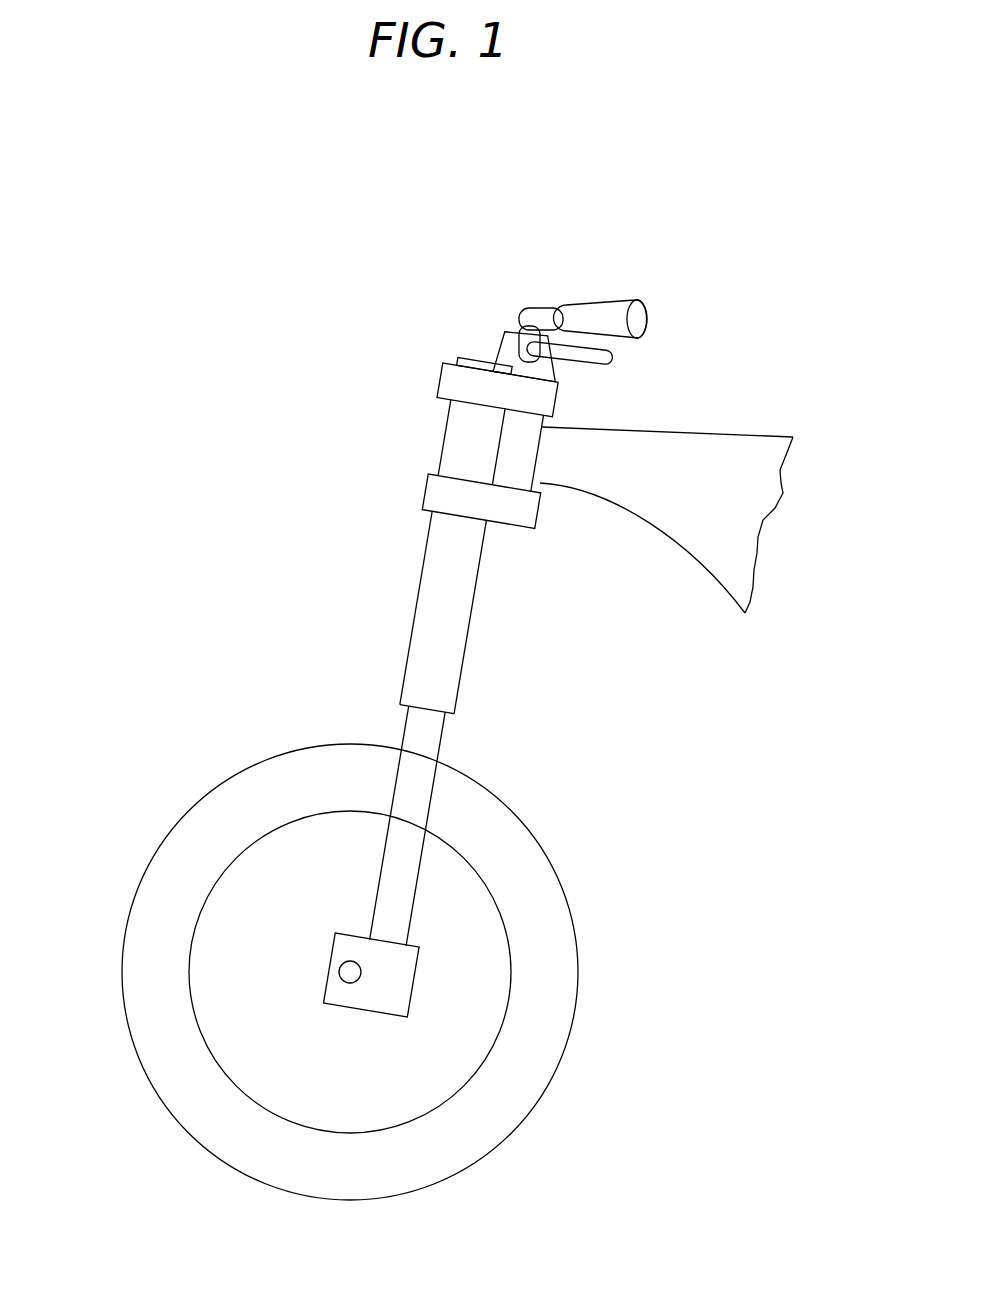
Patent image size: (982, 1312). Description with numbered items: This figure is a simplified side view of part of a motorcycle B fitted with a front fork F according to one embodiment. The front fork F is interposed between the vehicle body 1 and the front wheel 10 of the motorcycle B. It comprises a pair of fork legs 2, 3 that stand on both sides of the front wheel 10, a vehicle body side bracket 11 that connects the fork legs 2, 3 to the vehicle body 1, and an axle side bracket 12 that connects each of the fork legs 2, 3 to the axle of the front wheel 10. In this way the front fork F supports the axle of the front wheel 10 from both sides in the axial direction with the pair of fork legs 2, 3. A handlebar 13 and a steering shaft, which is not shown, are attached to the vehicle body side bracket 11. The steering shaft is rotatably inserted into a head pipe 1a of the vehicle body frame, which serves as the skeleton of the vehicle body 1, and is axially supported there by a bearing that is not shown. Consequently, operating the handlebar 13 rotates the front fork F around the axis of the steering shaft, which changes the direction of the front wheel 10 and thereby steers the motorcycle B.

The motorcycle B is at (429, 294).
The vehicle body 1 is at (712, 460).
The head pipe 1a is at (527, 457).
The fork leg 2 is at (387, 652).
The fork leg 3 is at (420, 620).
The front fork F is at (424, 652).
The front wheel 10 is at (197, 833).
The vehicle body side bracket 11 is at (422, 495).
The axle side bracket 12 is at (403, 987).
The handlebar 13 is at (545, 313).